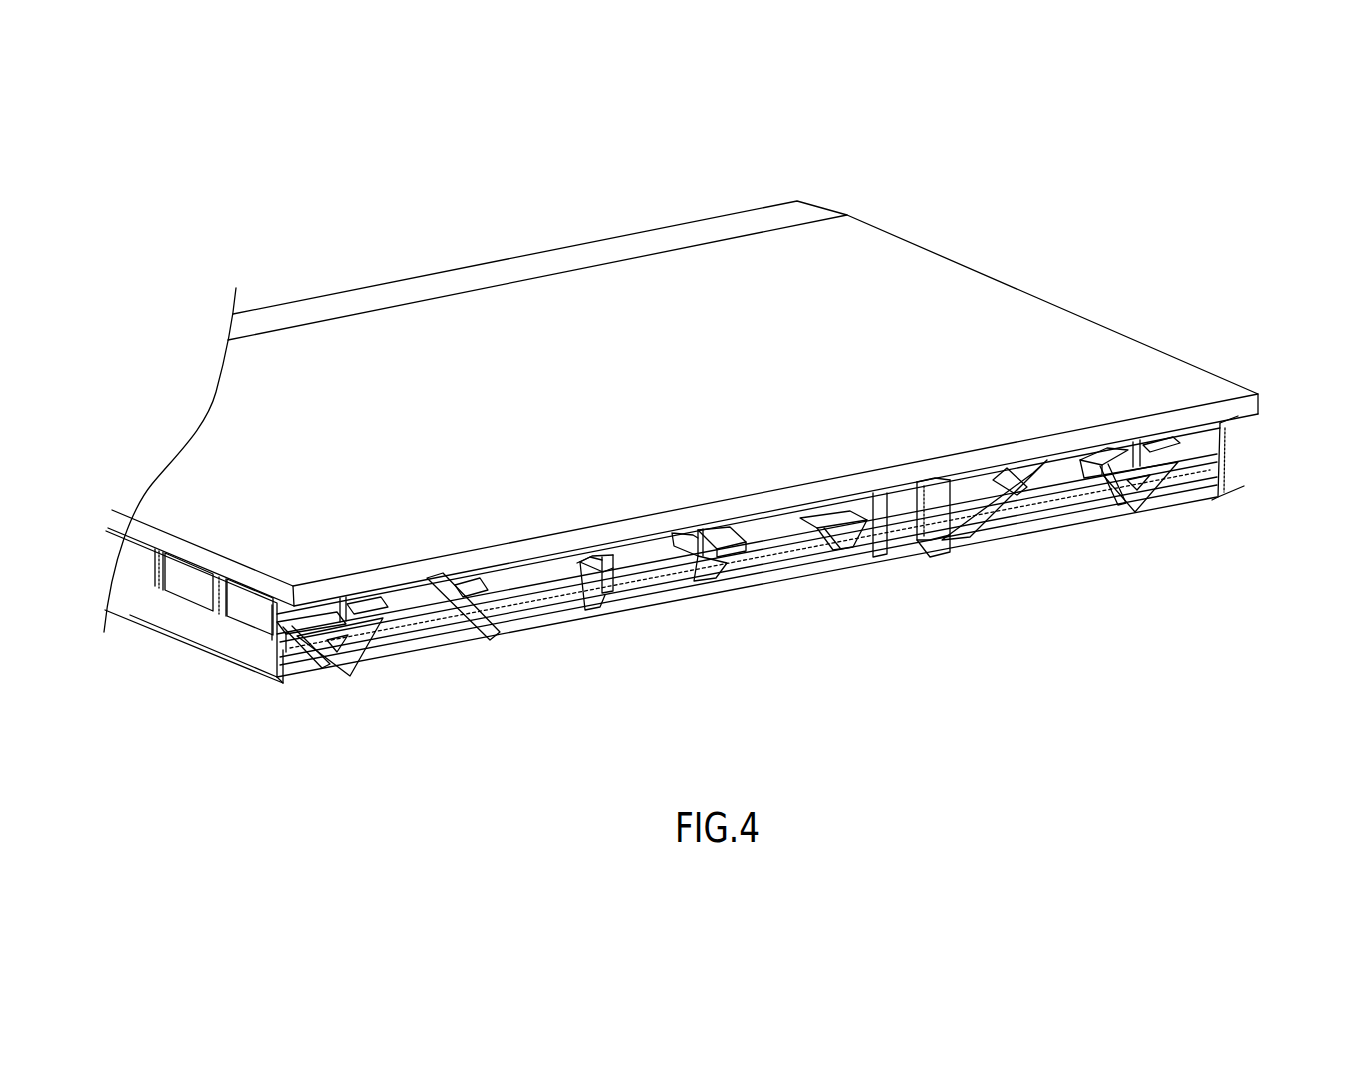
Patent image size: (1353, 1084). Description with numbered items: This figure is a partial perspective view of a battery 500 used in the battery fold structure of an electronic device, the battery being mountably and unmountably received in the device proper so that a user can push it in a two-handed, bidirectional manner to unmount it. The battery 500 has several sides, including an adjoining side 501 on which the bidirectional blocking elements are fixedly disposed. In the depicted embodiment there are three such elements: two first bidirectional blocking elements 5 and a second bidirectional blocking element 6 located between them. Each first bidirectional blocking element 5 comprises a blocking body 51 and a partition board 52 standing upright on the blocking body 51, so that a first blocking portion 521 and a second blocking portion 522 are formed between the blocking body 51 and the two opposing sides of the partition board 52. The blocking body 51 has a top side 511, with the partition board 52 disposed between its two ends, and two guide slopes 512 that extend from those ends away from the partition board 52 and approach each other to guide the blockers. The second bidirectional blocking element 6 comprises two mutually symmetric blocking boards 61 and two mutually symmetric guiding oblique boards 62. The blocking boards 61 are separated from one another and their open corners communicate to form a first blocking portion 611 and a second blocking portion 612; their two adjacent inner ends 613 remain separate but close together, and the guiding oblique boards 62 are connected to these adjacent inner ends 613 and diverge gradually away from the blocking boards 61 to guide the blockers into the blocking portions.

The battery 500 is at (491, 172).
The first bidirectional blocking element 5 is at (309, 805).
The adjoining side 501 is at (537, 619).
The blocking body 51 is at (425, 770).
The top side 511 is at (392, 640).
The guide slopes 512 is at (363, 650).
The partition board 52 is at (338, 612).
The first blocking portion 521 is at (281, 628).
The second blocking portion 522 is at (366, 601).
The second bidirectional blocking element 6 is at (927, 648).
The blocking boards 61 is at (678, 552).
The first blocking portion 611 is at (831, 510).
The second blocking portion 612 is at (716, 528).
The adjacent inner ends 613 is at (797, 518).
The guiding oblique boards 62 is at (728, 560).